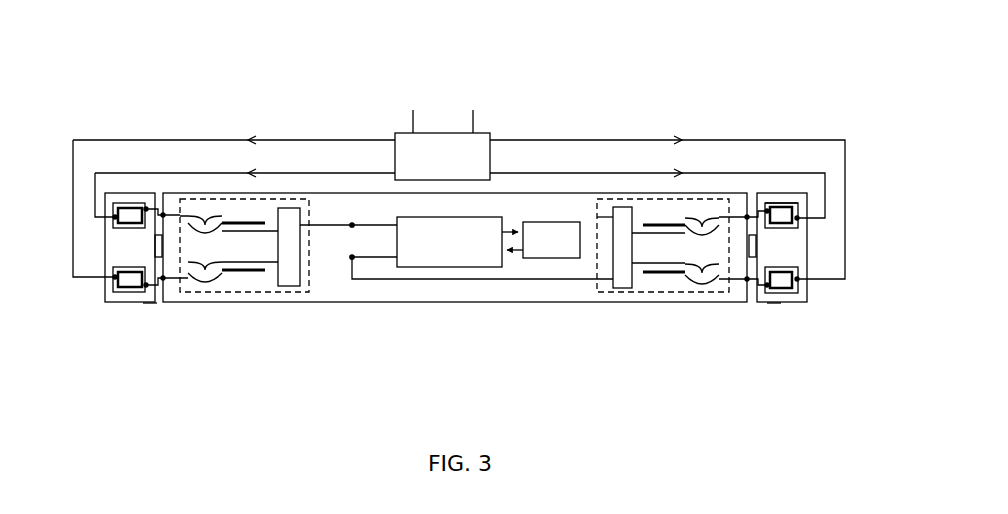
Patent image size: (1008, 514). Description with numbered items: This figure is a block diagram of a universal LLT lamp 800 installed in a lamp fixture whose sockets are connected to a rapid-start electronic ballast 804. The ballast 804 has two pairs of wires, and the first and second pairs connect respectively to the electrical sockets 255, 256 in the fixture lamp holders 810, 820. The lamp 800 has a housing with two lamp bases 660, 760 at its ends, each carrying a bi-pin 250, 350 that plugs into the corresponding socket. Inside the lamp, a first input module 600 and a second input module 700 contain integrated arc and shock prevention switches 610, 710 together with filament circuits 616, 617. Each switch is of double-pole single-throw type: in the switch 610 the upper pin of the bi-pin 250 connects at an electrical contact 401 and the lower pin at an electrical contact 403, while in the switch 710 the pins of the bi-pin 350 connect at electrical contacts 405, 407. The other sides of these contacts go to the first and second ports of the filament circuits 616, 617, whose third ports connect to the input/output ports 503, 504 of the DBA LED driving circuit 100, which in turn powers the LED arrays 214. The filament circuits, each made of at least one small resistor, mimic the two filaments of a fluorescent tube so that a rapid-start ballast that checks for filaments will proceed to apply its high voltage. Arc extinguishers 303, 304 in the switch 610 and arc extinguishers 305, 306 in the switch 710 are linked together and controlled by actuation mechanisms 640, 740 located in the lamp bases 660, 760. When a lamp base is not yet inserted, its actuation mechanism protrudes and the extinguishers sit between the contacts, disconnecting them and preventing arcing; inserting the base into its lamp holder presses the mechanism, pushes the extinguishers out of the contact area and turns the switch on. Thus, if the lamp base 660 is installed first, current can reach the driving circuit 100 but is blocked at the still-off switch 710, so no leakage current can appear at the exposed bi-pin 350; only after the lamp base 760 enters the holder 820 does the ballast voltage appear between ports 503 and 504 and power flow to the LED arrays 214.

The DBA LED driving circuit 100 is at (478, 268).
The LED arrays 214 is at (548, 259).
The bi-pin 250 is at (128, 214).
The electrical socket 255 is at (137, 207).
The electrical socket 256 is at (779, 207).
The arc extinguisher 303 is at (242, 221).
The arc extinguisher 304 is at (240, 272).
The arc extinguisher 305 is at (657, 223).
The arc extinguisher 306 is at (670, 274).
The bi-pin 350 is at (797, 204).
The electrical contact 401 is at (163, 213).
The electrical contact 403 is at (163, 280).
The electrical contact 405 is at (749, 215).
The electrical contact 407 is at (748, 281).
The input/output port 503 is at (352, 222).
The input/output port 504 is at (352, 260).
The first input module 600 is at (306, 199).
The integrated arc and shock prevention switch 610 is at (205, 216).
The first filament circuit 616 is at (292, 208).
The second filament circuit 617 is at (621, 207).
The actuation mechanism 640 is at (146, 285).
The lamp base 660 is at (178, 194).
The second input module 700 is at (643, 199).
The integrated arc and shock prevention switch 710 is at (699, 216).
The actuation mechanism 740 is at (767, 286).
The lamp base 760 is at (735, 194).
The universal LLT lamp 800 is at (548, 194).
The rapid-start electronic ballast 804 is at (489, 133).
The fixture lamp holder 810 is at (143, 303).
The fixture lamp holder 820 is at (774, 303).